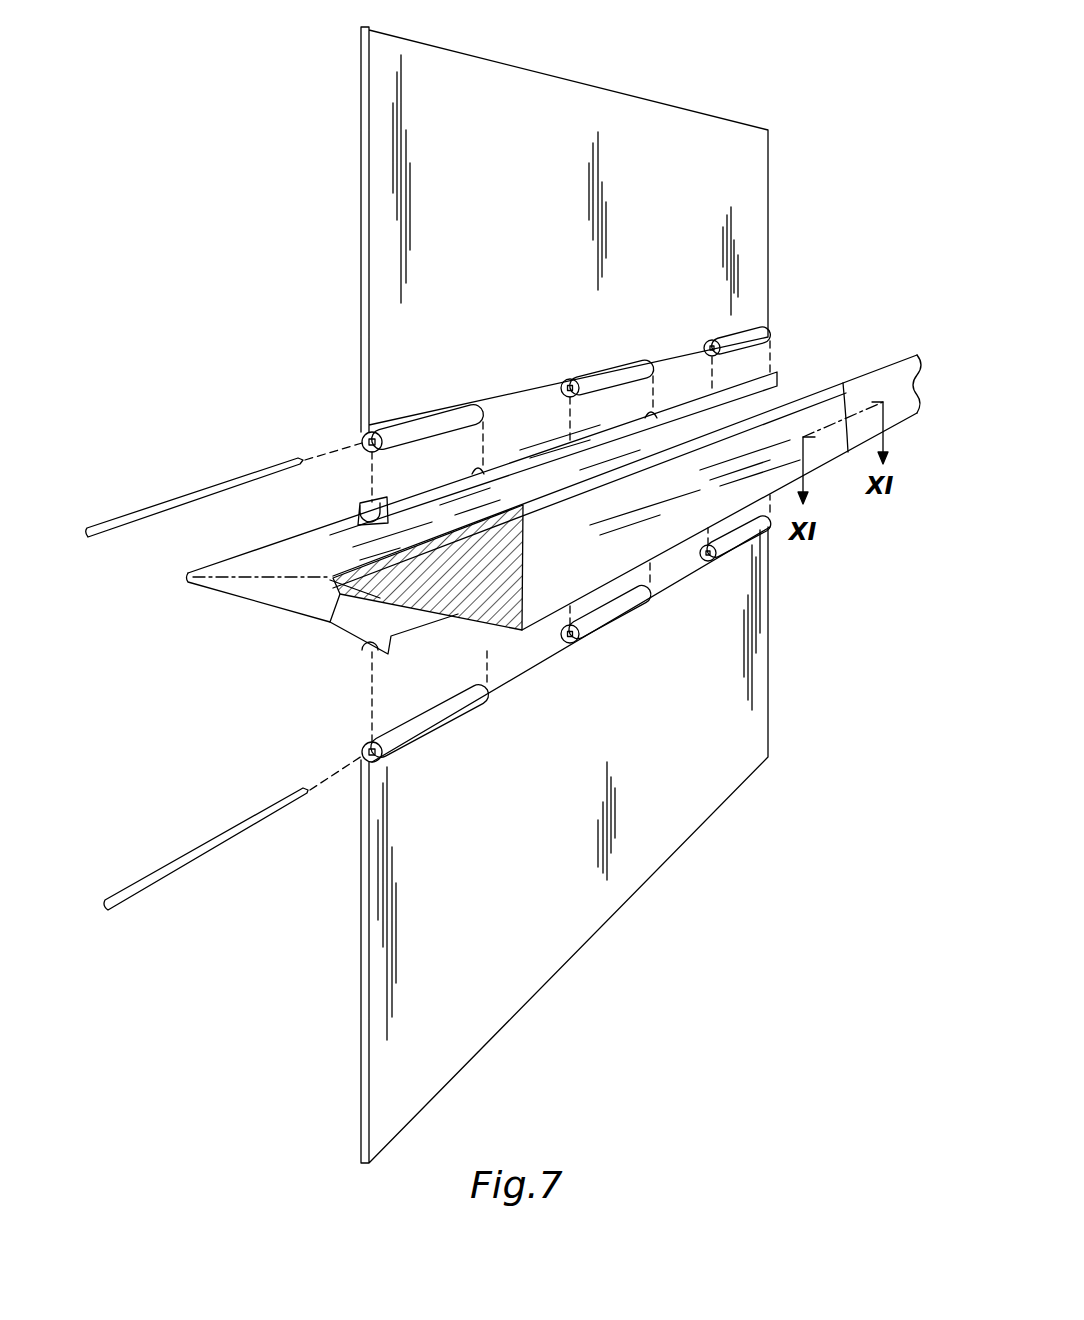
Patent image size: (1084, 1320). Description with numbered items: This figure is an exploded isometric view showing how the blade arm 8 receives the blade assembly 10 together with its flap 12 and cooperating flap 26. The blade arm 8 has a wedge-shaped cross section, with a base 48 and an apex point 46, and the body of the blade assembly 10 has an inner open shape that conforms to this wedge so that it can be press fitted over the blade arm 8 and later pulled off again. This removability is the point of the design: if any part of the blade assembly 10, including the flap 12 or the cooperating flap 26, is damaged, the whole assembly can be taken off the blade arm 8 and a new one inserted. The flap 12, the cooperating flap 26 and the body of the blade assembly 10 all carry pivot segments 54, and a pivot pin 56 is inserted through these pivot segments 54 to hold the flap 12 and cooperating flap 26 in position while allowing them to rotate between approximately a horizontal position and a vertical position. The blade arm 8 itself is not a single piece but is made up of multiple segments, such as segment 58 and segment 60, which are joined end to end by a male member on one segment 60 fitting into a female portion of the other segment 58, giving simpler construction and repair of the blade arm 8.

The blade arm 8 is at (893, 353).
The blade assembly 10 is at (213, 597).
The flap 12 is at (380, 172).
The cooperating flap 26 is at (380, 1013).
The apex point 46 is at (328, 578).
The base 48 is at (523, 567).
The pivot segments 54 is at (418, 425).
The pivot pin 56 is at (173, 497).
The segment 58 is at (905, 398).
The segment 60 is at (827, 453).